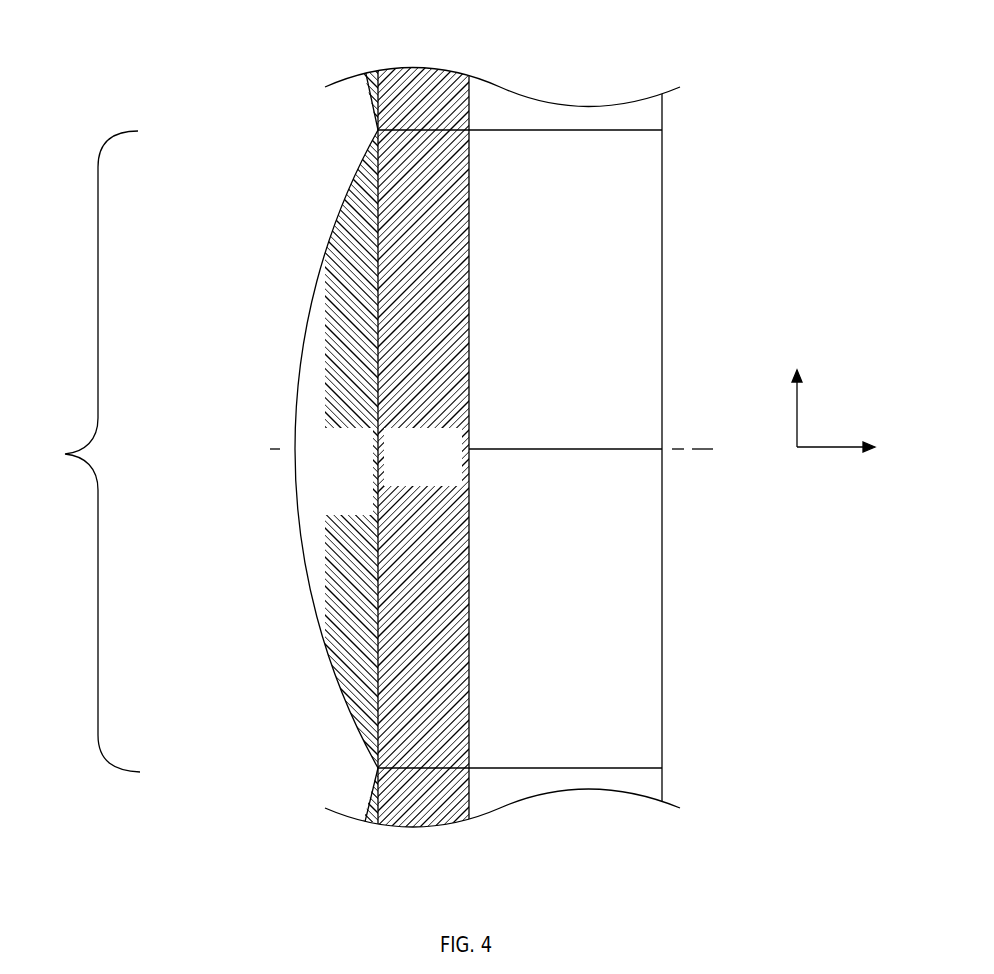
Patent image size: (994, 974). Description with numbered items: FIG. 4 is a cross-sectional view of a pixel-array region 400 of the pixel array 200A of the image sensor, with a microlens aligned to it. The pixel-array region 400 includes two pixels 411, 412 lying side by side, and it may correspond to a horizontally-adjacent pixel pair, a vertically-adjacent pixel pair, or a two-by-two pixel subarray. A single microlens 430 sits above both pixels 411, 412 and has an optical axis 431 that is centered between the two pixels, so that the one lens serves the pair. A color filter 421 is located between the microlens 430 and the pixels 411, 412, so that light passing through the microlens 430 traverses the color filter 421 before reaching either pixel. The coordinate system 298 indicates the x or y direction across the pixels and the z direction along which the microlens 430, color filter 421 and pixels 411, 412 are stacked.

The pixel array 200A is at (720, 62).
The pixel-array region 400 is at (62, 454).
The optical axis 431 is at (295, 449).
The microlens 430 is at (497, 445).
The color filter 421 is at (406, 483).
The pixel 412 is at (541, 315).
The pixel 411 is at (541, 638).
The coordinate system 298 is at (838, 470).